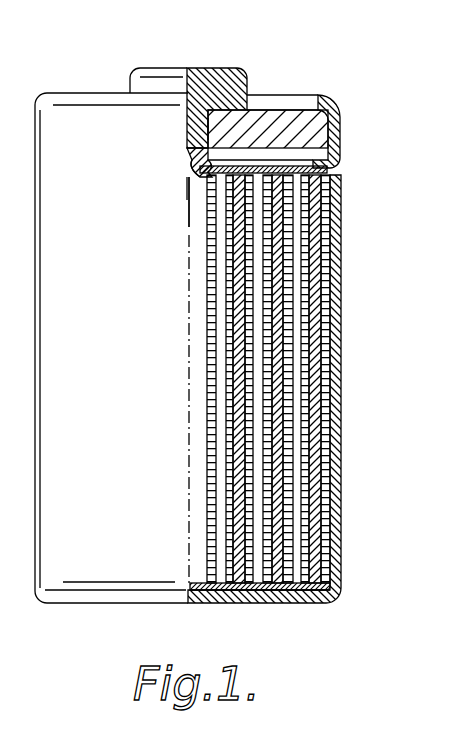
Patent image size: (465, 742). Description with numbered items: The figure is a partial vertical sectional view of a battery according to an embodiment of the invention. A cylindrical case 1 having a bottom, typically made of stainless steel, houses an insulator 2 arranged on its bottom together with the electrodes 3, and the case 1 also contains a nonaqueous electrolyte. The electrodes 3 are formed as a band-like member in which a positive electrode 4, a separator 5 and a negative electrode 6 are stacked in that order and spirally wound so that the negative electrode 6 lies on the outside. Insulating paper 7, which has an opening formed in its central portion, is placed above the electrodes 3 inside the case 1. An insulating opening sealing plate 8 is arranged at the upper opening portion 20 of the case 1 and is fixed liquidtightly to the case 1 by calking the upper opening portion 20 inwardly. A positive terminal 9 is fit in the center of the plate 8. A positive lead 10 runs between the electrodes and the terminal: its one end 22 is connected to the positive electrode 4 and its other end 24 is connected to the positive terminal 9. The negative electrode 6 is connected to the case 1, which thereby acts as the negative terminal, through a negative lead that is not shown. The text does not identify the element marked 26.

The cylindrical case 1 is at (342, 500).
The insulator 2 is at (297, 603).
The electrodes 3 is at (310, 379).
The positive electrode 4 is at (295, 290).
The separator 5 is at (308, 323).
The negative electrode 6 is at (392, 262).
The insulating paper 7 is at (337, 163).
The insulating opening sealing plate 8 is at (318, 133).
The positive terminal 9 is at (238, 80).
The positive lead 10 is at (190, 178).
The upper opening portion 20 is at (310, 88).
The one end of positive lead 22 is at (190, 198).
The other end of positive lead 24 is at (186, 156).
The seal 26 is at (228, 126).